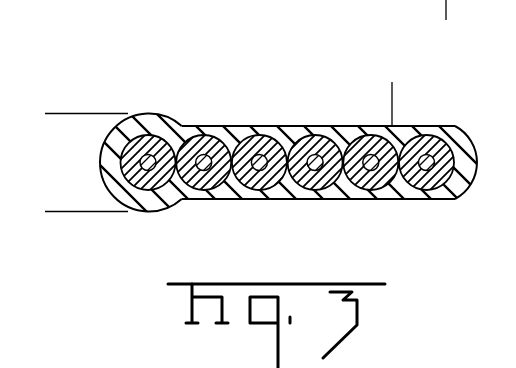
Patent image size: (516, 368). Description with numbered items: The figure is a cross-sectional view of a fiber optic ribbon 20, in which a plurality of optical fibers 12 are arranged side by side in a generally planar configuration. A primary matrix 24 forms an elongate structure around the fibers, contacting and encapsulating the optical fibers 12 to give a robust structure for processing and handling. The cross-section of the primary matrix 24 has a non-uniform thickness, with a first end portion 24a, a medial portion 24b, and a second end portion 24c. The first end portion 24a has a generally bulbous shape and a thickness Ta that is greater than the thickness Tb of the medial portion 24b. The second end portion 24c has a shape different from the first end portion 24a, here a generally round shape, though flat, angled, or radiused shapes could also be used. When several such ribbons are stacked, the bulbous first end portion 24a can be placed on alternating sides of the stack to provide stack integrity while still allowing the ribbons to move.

The ribbon 20 is at (316, 100).
The optical fibers 12 is at (428, 135).
The primary matrix 24 is at (340, 135).
The first end portion 24a is at (148, 205).
The medial portion 24b is at (292, 197).
The second end portion 24c is at (430, 195).
The thickness of first end portion Ta is at (61, 124).
The thickness of medial portion Tb is at (216, 105).